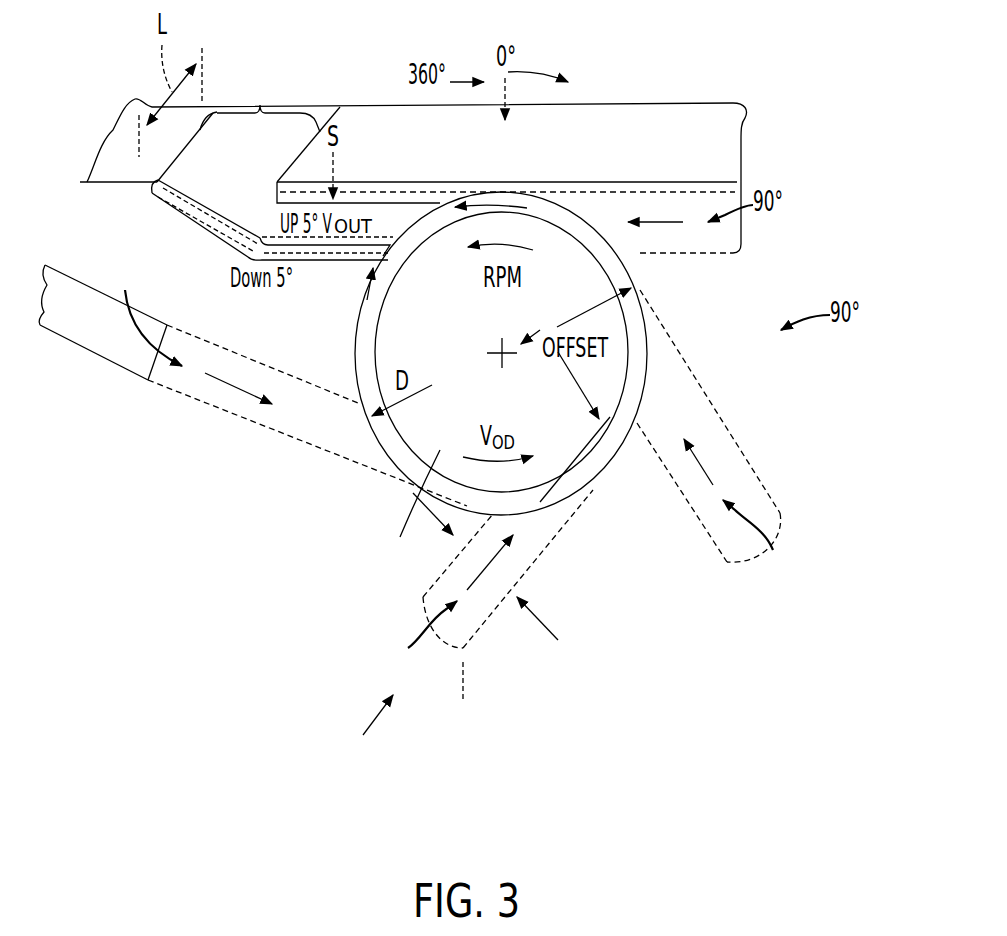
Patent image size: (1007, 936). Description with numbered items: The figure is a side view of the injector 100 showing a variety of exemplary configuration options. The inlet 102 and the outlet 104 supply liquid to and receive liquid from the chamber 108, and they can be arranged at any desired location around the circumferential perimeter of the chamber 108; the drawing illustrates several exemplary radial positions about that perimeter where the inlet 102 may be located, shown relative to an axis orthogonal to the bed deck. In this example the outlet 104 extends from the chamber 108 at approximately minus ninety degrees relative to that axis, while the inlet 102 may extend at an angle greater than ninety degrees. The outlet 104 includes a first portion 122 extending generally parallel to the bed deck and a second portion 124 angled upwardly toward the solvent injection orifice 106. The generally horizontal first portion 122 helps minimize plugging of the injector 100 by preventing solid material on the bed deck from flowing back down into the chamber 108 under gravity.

The injector 100 is at (781, 262).
The inlet 102 is at (215, 407).
The outlet 104 is at (277, 200).
The solvent injection orifice 106 is at (260, 103).
The chamber 108 is at (420, 509).
The first portion 122 is at (360, 261).
The second portion 124 is at (198, 233).